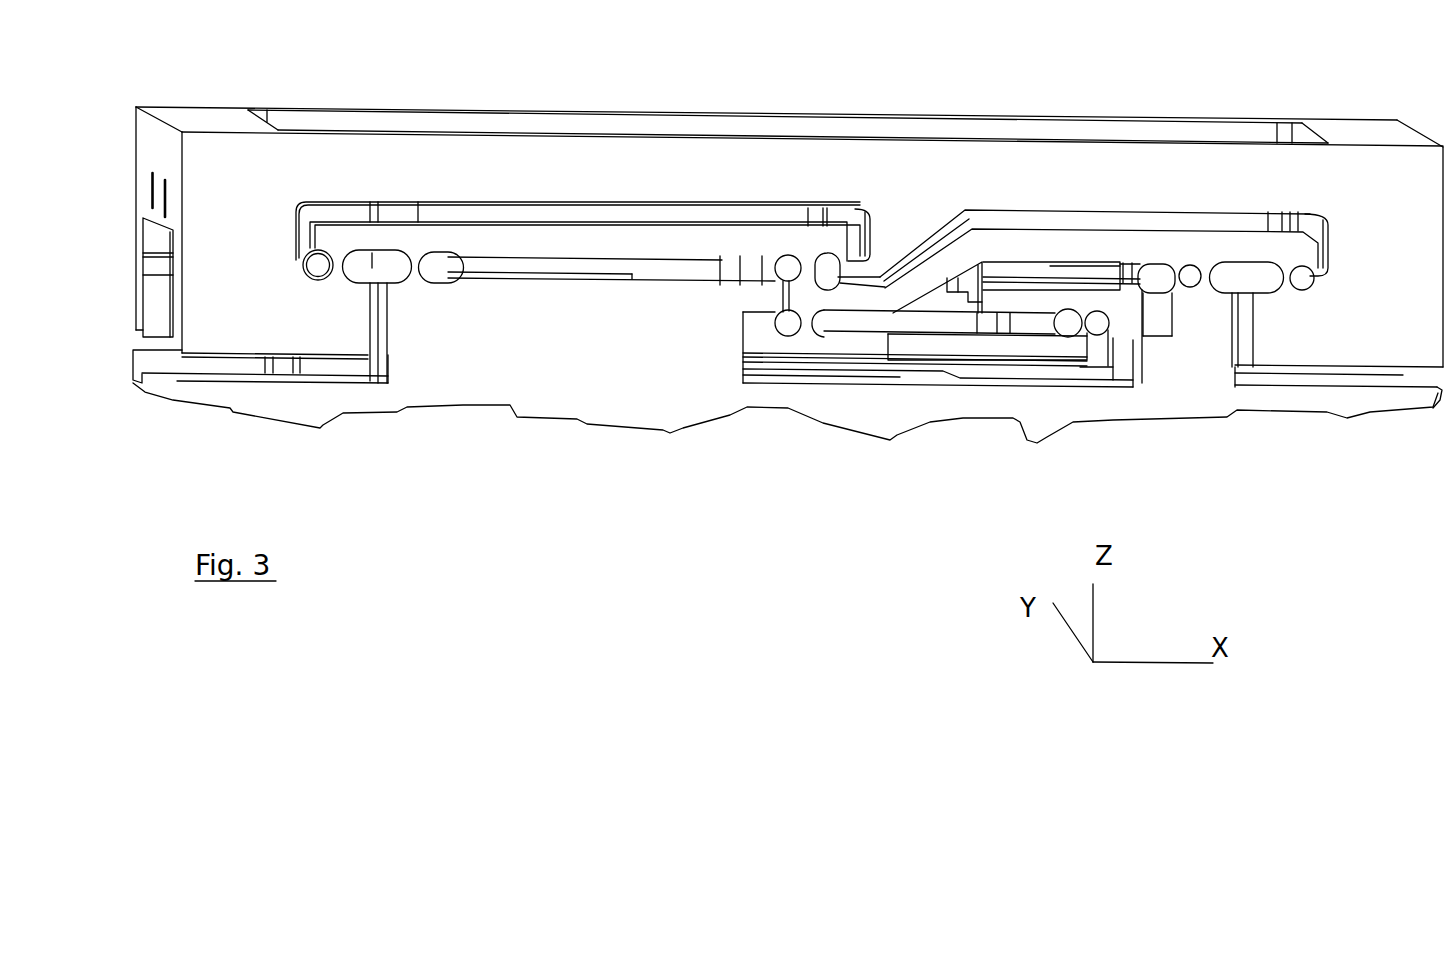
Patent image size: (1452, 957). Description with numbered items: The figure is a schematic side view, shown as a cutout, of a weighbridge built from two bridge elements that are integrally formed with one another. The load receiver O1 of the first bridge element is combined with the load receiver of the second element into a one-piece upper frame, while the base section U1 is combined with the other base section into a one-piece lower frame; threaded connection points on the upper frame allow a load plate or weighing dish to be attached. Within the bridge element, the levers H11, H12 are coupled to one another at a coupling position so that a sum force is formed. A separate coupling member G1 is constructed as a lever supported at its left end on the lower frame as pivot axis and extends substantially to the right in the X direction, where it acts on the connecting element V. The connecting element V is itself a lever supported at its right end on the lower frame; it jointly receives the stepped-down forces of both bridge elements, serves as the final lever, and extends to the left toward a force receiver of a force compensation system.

The load receiver O1 is at (788, 257).
The lever H11 is at (541, 240).
The lever H12 is at (1143, 250).
The connecting element V is at (1087, 293).
The coupling member G1 is at (810, 347).
The base section U1 is at (583, 375).